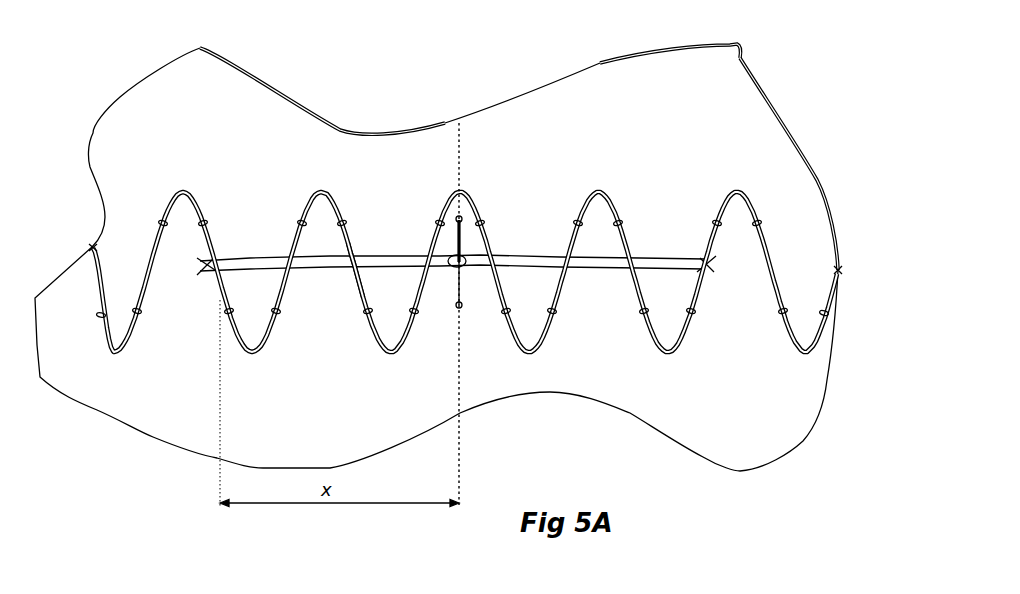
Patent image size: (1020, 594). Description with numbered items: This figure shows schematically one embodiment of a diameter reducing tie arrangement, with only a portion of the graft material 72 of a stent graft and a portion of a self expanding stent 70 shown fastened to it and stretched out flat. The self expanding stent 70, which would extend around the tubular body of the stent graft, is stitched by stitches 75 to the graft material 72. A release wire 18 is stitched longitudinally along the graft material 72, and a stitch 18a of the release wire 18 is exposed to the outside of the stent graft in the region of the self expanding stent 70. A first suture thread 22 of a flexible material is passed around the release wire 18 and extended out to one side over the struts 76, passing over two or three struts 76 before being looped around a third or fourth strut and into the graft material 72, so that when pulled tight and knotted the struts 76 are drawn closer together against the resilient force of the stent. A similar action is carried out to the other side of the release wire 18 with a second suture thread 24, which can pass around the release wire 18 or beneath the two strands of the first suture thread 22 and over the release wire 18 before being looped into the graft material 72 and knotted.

The release wire 18 is at (459, 163).
The stitch of the release wire 18a is at (457, 240).
The first suture thread 22 is at (263, 258).
The second suture thread 24 is at (517, 257).
The self expanding stent 70 is at (618, 232).
The graft material 72 is at (173, 363).
The stitches 75 is at (138, 312).
The struts 76 is at (357, 280).